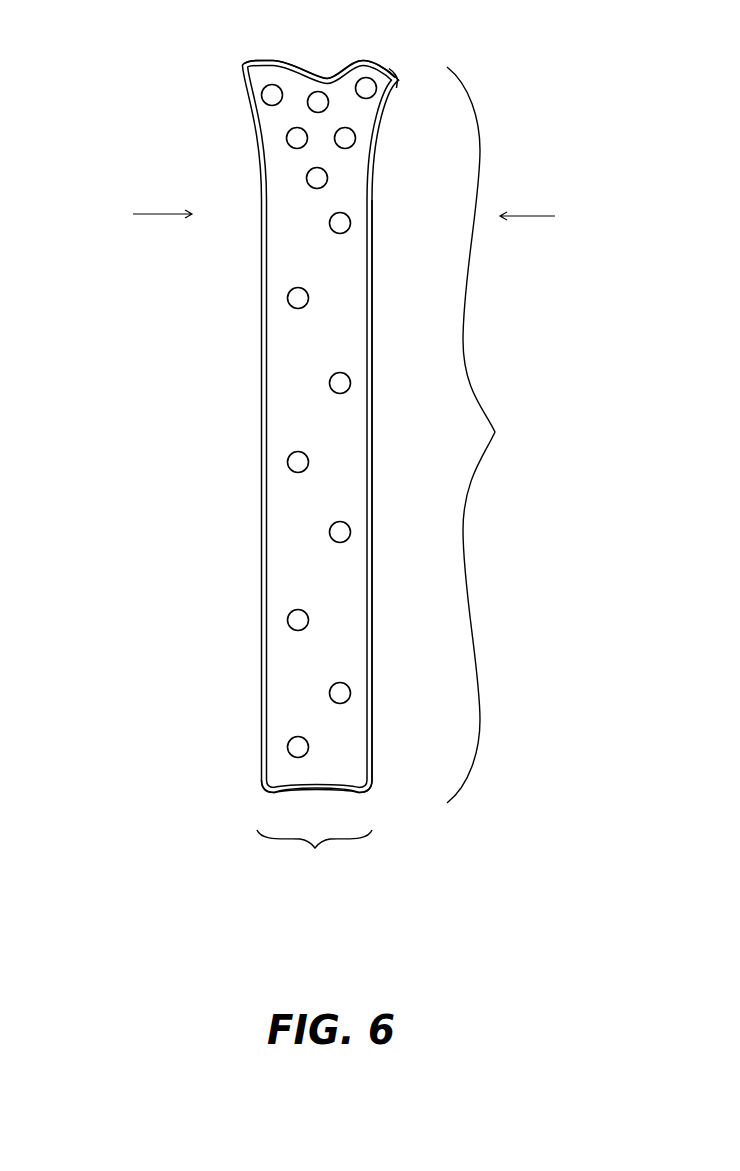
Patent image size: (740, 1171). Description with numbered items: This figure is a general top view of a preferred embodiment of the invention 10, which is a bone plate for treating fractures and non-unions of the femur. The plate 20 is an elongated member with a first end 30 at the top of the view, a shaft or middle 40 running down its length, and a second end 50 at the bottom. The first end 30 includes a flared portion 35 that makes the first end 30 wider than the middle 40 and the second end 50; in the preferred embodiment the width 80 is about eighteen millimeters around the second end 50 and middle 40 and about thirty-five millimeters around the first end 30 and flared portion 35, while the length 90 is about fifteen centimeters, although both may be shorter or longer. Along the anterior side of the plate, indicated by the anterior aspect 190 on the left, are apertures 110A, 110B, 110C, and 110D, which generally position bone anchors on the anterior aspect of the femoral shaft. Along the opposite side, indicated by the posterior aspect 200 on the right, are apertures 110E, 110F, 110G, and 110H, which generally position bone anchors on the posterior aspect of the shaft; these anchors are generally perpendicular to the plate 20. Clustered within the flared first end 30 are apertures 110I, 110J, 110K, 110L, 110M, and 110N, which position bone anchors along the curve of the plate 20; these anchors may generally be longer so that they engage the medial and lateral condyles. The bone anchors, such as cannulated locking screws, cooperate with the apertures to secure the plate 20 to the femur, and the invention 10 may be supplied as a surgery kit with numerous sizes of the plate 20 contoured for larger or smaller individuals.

The invention 10 is at (574, 62).
The plate 20 is at (313, 374).
The first end 30 is at (383, 63).
The flared portion 35 is at (400, 77).
The middle 40 is at (372, 332).
The second end 50 is at (358, 793).
The width 80 is at (314, 854).
The length 90 is at (490, 435).
The aperture 110A is at (298, 298).
The aperture 110B is at (298, 462).
The aperture 110C is at (298, 620).
The aperture 110D is at (298, 747).
The aperture 110E is at (340, 223).
The aperture 110F is at (340, 383).
The aperture 110G is at (340, 532).
The aperture 110H is at (340, 693).
The aperture 110I is at (317, 178).
The aperture 110J is at (297, 138).
The aperture 110K is at (272, 95).
The aperture 110L is at (345, 138).
The aperture 110M is at (366, 88).
The aperture 110N is at (318, 102).
The anterior aspect 190 is at (119, 230).
The posterior aspect 200 is at (576, 231).